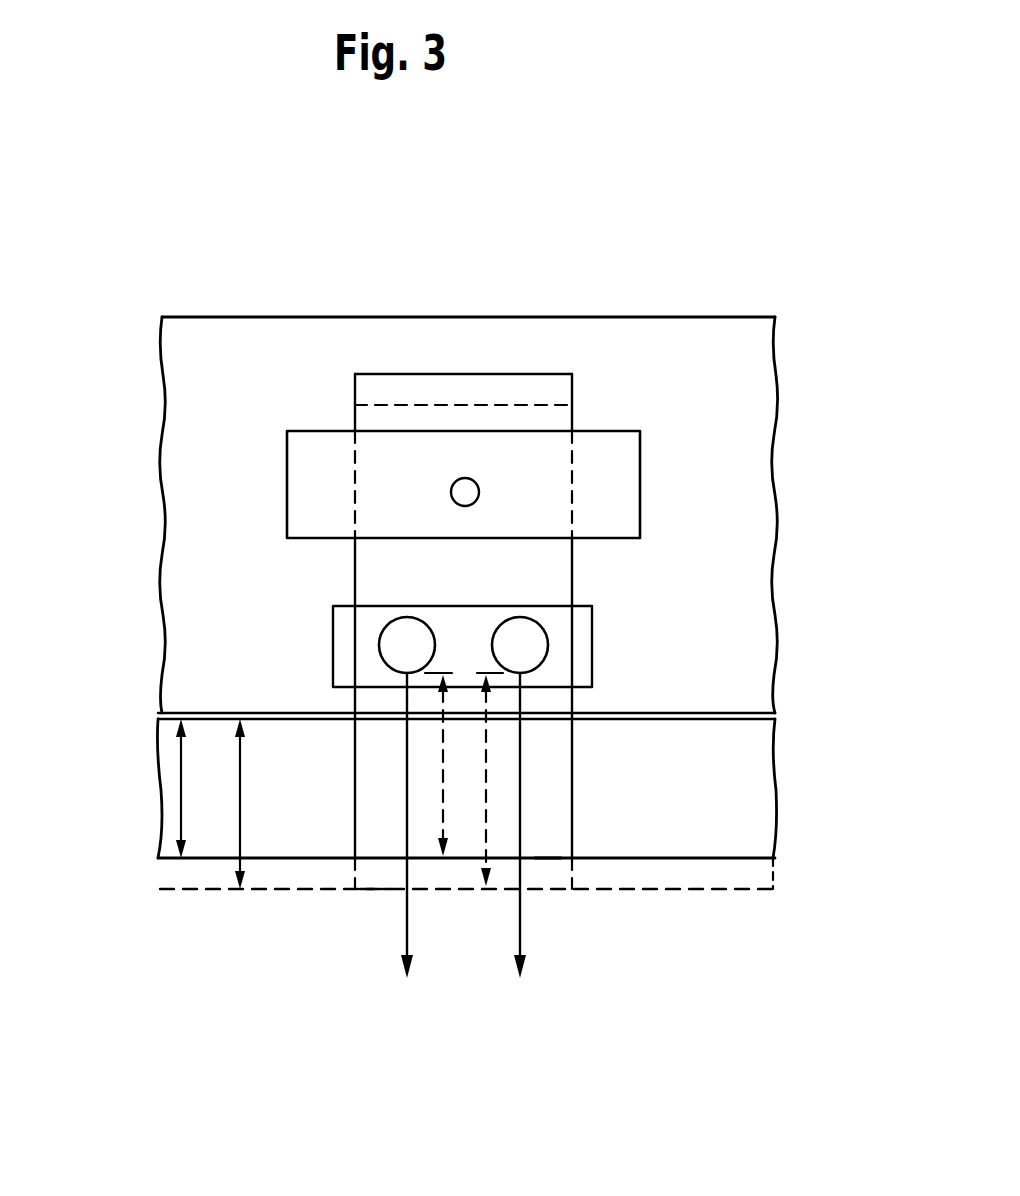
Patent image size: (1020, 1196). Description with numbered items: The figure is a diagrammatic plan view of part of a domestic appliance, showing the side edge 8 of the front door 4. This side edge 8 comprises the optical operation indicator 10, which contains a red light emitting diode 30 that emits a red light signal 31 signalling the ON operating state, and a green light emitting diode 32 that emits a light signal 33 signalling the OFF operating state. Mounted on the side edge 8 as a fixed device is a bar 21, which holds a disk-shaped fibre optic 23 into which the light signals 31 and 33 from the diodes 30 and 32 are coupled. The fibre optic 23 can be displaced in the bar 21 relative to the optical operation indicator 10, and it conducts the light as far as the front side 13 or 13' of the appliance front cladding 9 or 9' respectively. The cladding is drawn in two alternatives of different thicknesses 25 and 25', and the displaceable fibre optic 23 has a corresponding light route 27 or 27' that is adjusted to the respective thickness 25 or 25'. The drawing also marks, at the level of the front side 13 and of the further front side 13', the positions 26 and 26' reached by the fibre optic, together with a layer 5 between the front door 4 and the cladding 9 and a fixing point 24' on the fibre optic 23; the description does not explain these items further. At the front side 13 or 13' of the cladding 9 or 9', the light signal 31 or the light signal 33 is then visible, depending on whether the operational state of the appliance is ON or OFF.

The front door 4 is at (757, 380).
The intermediate layer 5 is at (728, 708).
The side edge 8 is at (203, 458).
The appliance front cladding 9 is at (499, 788).
The appliance front cladding 9' is at (786, 914).
The optical operation indicator 10 is at (326, 645).
The front side 13 is at (519, 878).
The front side 13' is at (467, 943).
The bar 21 is at (313, 450).
The fibre optic 23 is at (551, 573).
The pivot point 24' is at (499, 374).
The thickness 25 is at (134, 788).
The thickness 25' is at (279, 804).
The end position 26 is at (583, 911).
The extended end position 26' is at (322, 927).
The light route 27 is at (376, 764).
The light route 27' is at (558, 779).
The red light emitting diode 30 is at (388, 626).
The red light signal 31 is at (407, 920).
The green light emitting diode 32 is at (547, 632).
The light signal 33 is at (520, 924).